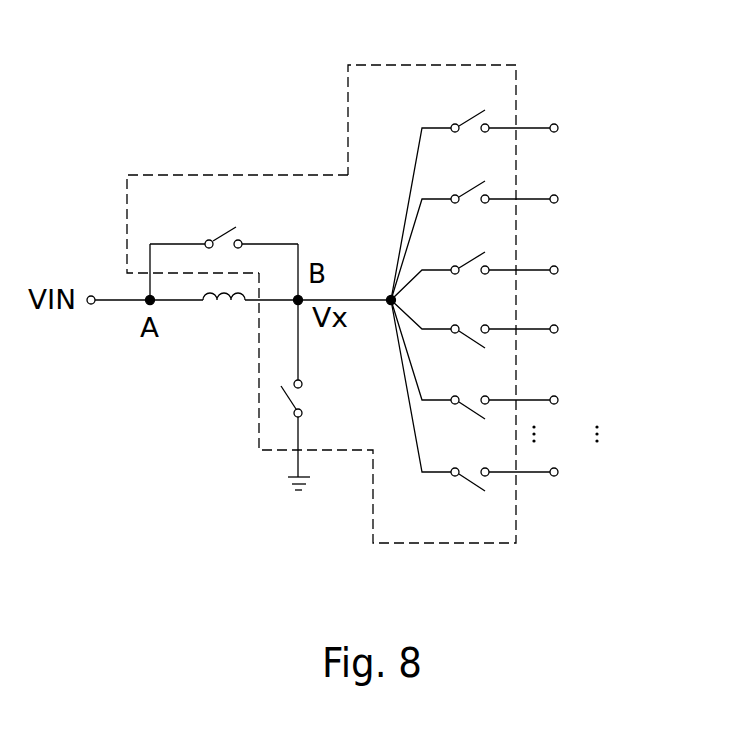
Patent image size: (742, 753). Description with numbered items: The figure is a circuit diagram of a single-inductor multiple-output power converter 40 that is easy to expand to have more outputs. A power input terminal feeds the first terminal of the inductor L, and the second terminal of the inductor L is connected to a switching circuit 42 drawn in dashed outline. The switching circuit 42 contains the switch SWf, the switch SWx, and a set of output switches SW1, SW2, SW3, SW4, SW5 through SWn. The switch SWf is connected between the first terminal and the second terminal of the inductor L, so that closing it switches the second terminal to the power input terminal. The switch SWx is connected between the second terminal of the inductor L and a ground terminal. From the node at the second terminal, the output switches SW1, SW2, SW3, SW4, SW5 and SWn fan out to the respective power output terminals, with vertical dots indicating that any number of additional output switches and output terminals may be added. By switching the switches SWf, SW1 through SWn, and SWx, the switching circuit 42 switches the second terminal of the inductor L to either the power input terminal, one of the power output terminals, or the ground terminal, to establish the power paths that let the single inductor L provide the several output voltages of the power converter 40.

The single-inductor multiple-output power converter 40 is at (662, 77).
The switching circuit 42 is at (238, 175).
The inductor L is at (224, 318).
The switch SWf is at (223, 220).
The switch SWx is at (324, 398).
The switch SW1 is at (469, 105).
The switch SW2 is at (469, 175).
The switch SW3 is at (469, 247).
The switch SW4 is at (469, 353).
The switch SW5 is at (469, 423).
The switch SWn is at (469, 495).